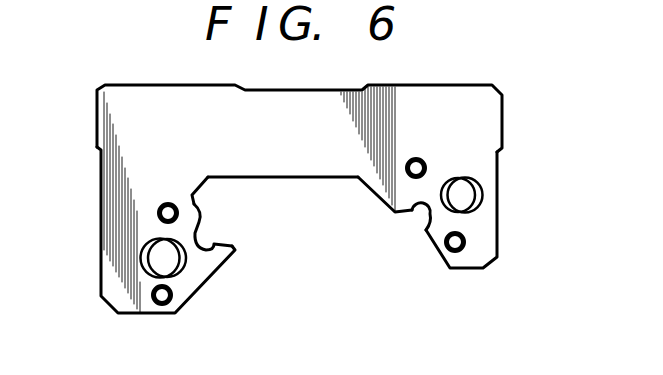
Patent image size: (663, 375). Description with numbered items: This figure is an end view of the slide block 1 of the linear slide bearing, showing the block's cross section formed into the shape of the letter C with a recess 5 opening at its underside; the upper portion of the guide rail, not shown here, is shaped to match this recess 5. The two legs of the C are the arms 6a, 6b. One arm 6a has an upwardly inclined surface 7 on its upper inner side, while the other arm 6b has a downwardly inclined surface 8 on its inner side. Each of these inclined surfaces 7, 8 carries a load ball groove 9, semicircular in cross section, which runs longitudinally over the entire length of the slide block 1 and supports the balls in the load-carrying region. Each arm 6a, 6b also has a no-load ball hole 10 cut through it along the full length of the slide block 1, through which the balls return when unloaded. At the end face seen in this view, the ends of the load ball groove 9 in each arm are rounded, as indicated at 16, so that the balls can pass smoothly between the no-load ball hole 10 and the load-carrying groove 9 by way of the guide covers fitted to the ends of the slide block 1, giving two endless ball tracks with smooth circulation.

The slide block 1 is at (509, 112).
The recess 5 is at (295, 178).
The arm 6a is at (138, 316).
The arm 6b is at (490, 247).
The upwardly inclined surface 7 is at (197, 206).
The downwardly inclined surface 8 is at (377, 197).
The load ball groove 9 is at (210, 243).
The no-load ball hole 10 is at (146, 259).
The rounded ends of load ball groove 16 is at (195, 252).